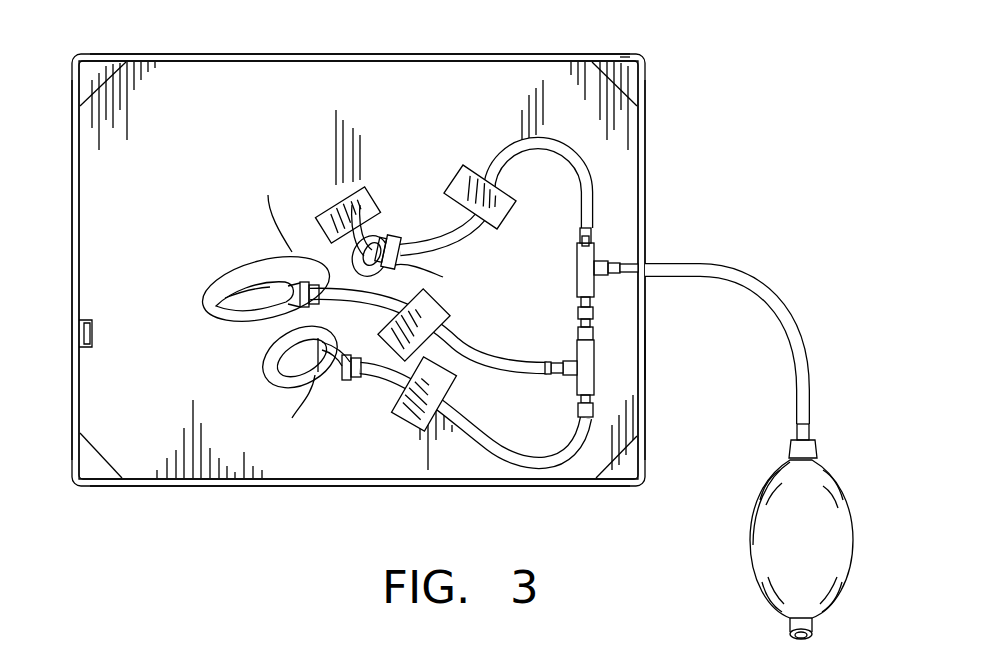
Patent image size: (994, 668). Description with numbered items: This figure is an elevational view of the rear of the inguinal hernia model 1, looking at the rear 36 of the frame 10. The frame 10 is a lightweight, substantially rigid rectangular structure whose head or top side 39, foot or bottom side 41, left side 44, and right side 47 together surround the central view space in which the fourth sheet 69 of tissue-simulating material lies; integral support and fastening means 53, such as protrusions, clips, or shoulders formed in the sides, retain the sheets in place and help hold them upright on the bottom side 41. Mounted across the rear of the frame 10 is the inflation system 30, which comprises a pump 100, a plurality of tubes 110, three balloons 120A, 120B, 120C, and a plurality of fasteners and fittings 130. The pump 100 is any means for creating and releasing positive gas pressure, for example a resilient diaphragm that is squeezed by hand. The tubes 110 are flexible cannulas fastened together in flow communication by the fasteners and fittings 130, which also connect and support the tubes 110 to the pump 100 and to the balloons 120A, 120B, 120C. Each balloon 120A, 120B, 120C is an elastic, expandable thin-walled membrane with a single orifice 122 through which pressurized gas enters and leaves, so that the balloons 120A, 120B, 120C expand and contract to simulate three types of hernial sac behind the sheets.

The inguinal hernia model 1 is at (692, 95).
The frame 10 is at (398, 48).
The inflation system 30 is at (831, 440).
The rear 36 is at (646, 357).
The head or top side 39 is at (172, 55).
The foot or bottom side 41 is at (232, 487).
The left side 44 is at (72, 112).
The right side 47 is at (646, 157).
The integral support and fastening means 53 is at (79, 335).
The fourth sheet 69 is at (358, 270).
The pump 100 is at (763, 553).
The tubes 110 is at (463, 347).
The balloon 120A is at (385, 228).
The balloon 120B is at (264, 262).
The balloon 120C is at (288, 343).
The orifice 122 is at (366, 302).
The fasteners and fittings 130 is at (500, 206).